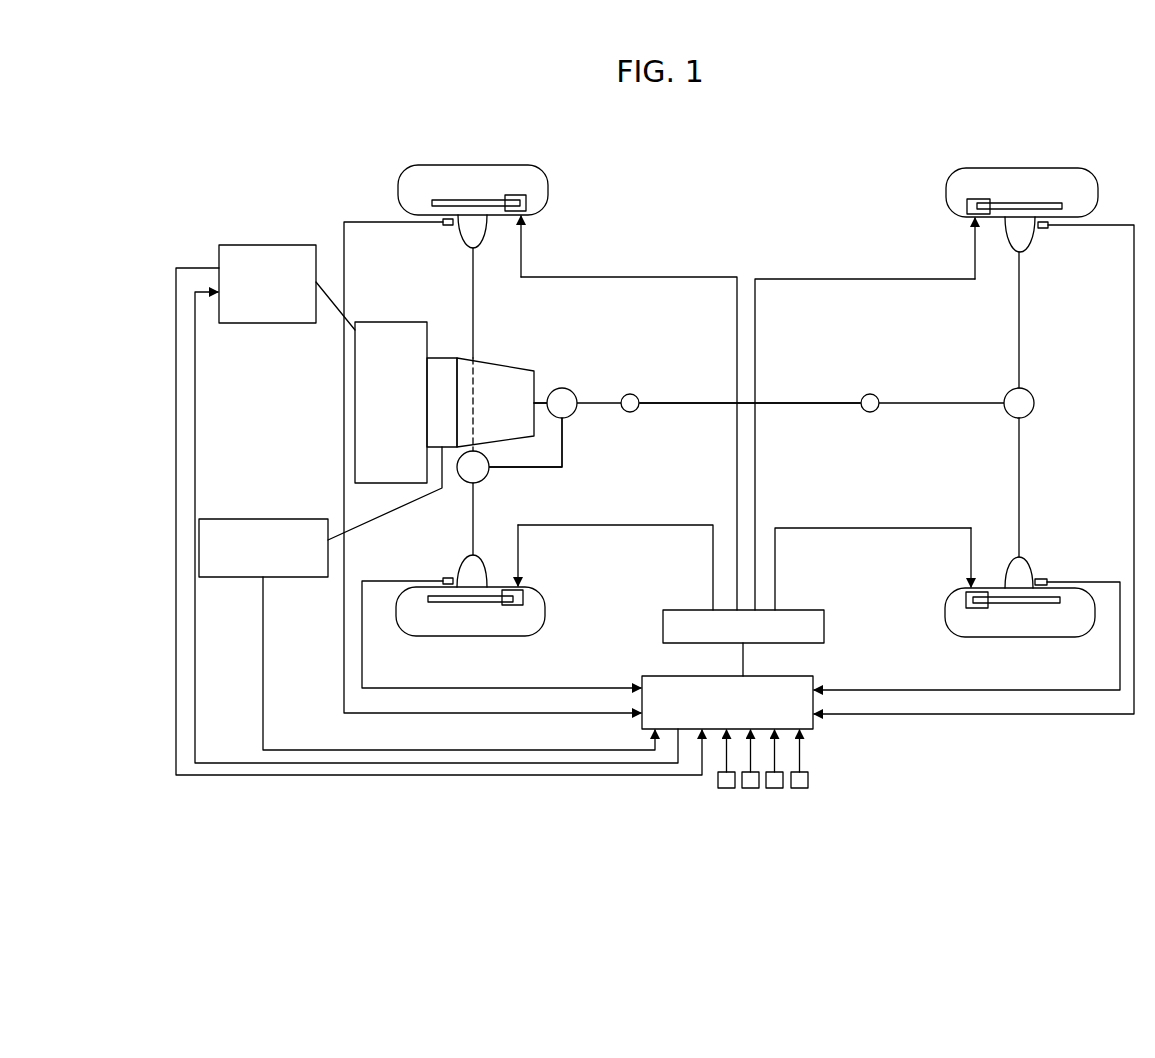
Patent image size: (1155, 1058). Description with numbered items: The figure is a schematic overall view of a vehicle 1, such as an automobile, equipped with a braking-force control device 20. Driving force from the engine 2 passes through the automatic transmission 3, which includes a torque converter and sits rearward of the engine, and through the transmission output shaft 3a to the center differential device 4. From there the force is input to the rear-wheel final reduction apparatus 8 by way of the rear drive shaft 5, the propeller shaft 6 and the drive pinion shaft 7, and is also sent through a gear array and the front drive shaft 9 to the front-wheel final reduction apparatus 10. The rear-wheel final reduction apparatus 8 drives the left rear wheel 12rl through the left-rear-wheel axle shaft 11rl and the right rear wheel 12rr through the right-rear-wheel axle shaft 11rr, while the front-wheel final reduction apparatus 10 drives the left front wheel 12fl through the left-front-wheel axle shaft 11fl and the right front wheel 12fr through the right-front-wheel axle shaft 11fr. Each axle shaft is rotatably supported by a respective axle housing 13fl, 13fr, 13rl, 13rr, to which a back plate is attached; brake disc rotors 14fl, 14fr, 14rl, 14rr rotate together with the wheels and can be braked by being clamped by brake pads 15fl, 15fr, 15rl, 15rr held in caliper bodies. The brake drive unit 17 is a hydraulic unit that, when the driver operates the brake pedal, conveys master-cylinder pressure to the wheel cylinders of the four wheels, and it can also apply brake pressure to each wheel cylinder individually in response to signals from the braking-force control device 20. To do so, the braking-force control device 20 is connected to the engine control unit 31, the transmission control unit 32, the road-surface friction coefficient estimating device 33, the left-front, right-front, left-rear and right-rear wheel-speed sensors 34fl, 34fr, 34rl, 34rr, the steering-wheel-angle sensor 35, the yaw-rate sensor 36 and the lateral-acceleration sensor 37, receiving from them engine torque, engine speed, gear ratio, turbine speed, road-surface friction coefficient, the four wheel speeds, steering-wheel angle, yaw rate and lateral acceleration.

The vehicle 1 is at (797, 199).
The engine 2 is at (372, 322).
The automatic transmission 3 is at (507, 371).
The transmission output shaft 3a is at (548, 392).
The center differential device 4 is at (577, 395).
The rear drive shaft 5 is at (604, 407).
The propeller shaft 6 is at (688, 407).
The drive pinion shaft 7 is at (922, 407).
The rear-wheel final reduction apparatus 8 is at (1036, 403).
The front drive shaft 9 is at (553, 470).
The front-wheel final reduction apparatus 10 is at (485, 480).
The right-front-wheel axle shaft 11fr is at (473, 301).
The left-front-wheel axle shaft 11fl is at (473, 522).
The right-rear-wheel axle shaft 11rr is at (1019, 324).
The left-rear-wheel axle shaft 11rl is at (1019, 472).
The right front wheel 12fr is at (518, 165).
The left front wheel 12fl is at (515, 636).
The right rear wheel 12rr is at (975, 168).
The left rear wheel 12rl is at (972, 637).
The axle housing 13fr is at (484, 240).
The axle housing 13fl is at (483, 571).
The axle housing 13rr is at (1010, 240).
The axle housing 13rl is at (1008, 571).
The brake disc rotor 14fr is at (444, 200).
The brake disc rotor 14fl is at (442, 602).
The brake disc rotor 14rr is at (1050, 203).
The brake disc rotor 14rl is at (1047, 604).
The brake pads 15fr is at (548, 204).
The brake pads 15fl is at (545, 604).
The brake pads 15rr is at (946, 207).
The brake pads 15rl is at (945, 604).
The brake drive unit 17 is at (800, 610).
The braking-force control device 20 is at (813, 678).
The engine control unit 31 is at (274, 245).
The transmission control unit 32 is at (294, 519).
The road-surface friction coefficient estimating device 33 is at (726, 788).
The right-front-wheel-speed sensor 34fr is at (447, 226).
The left-front-wheel-speed sensor 34fl is at (443, 578).
The right-rear-wheel-speed sensor 34rr is at (1043, 228).
The left-rear-wheel-speed sensor 34rl is at (1042, 579).
The steering-wheel-angle sensor 35 is at (750, 788).
The yaw-rate sensor 36 is at (774, 788).
The lateral-acceleration sensor 37 is at (799, 788).